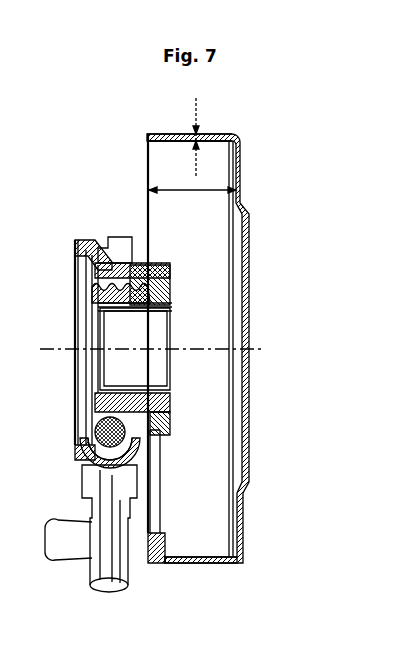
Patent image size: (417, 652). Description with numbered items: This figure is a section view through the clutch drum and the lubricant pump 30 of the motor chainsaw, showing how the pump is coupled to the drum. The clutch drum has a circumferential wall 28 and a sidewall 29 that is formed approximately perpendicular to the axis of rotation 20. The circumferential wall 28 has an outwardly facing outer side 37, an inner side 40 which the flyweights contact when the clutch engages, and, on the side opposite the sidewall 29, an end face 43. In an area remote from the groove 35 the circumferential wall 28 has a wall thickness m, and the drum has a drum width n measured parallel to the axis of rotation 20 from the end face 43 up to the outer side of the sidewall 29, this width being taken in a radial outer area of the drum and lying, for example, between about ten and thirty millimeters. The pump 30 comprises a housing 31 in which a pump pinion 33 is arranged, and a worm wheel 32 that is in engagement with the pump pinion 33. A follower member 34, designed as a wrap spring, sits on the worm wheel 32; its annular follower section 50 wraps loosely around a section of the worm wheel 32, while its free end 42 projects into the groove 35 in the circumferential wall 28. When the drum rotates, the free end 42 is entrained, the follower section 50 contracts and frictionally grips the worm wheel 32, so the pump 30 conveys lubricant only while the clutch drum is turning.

The axis of rotation 20 is at (60, 346).
The circumferential wall 28 is at (218, 565).
The sidewall 29 is at (248, 518).
The pump 30 is at (58, 465).
The housing 31 is at (87, 240).
The worm wheel 32 is at (78, 283).
The pump pinion 33 is at (90, 435).
The follower member 34 is at (158, 275).
The groove 35 is at (168, 562).
The outer side 37 is at (170, 133).
The inner side 40 is at (163, 145).
The free end 42 is at (157, 567).
The end face 43 is at (147, 139).
The follower section 50 is at (162, 420).
The wall thickness m is at (200, 138).
The drum width n is at (192, 198).